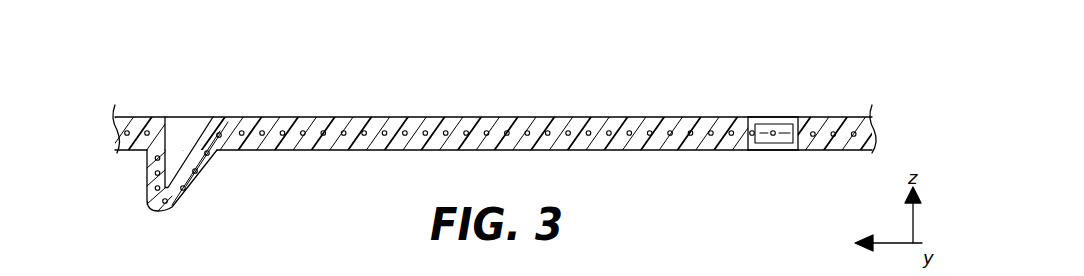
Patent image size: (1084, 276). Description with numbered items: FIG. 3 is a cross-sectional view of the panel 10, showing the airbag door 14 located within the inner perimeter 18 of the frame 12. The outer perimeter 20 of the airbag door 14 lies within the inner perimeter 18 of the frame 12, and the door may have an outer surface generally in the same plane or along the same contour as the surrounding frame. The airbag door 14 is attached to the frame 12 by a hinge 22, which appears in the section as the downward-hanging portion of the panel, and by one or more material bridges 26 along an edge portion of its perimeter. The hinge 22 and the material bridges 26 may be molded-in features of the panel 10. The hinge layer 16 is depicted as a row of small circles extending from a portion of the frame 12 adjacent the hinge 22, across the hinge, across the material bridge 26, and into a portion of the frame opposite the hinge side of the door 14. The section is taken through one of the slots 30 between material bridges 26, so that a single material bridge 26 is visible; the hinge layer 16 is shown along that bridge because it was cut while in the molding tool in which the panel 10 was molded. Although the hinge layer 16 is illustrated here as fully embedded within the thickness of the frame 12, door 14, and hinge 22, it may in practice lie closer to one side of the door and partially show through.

The panel 10 is at (93, 75).
The frame 12 is at (827, 117).
The airbag door 14 is at (478, 117).
The hinge layer 16 is at (281, 131).
The inner perimeter 18 is at (790, 143).
The outer perimeter 20 is at (753, 150).
The hinge 22 is at (200, 143).
The material bridge 26 is at (778, 124).
The slot 30 is at (753, 118).